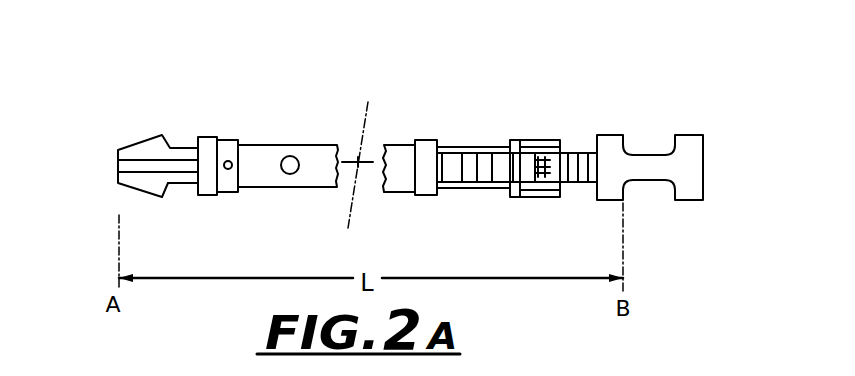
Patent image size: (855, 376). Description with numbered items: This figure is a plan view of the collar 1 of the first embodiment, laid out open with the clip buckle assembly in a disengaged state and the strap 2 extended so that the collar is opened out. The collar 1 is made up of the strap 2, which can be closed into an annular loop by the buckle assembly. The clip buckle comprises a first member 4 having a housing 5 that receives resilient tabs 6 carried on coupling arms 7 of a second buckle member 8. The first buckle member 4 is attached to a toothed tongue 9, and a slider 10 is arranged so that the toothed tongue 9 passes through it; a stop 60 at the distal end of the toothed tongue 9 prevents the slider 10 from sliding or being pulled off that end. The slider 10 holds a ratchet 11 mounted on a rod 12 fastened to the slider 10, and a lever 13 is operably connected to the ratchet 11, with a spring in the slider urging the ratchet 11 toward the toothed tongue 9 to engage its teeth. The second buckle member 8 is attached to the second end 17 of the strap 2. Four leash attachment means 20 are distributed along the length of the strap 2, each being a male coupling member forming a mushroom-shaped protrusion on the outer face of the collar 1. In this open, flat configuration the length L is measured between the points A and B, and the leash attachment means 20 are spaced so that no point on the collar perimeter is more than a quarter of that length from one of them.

The collar 1 is at (500, 136).
The strap 2 is at (257, 146).
The first member 4 is at (625, 148).
The housing 5 is at (657, 143).
The resilient tabs 6 is at (147, 189).
The coupling arms 7 is at (185, 184).
The second buckle member 8 is at (207, 137).
The toothed tongue 9 is at (466, 147).
The slider 10 is at (543, 141).
The ratchet 11 is at (518, 197).
The rod 12 is at (543, 198).
The lever 13 is at (553, 168).
The second end 17 is at (246, 204).
The leash attachment means 20 is at (291, 164).
The stop 60 is at (426, 146).